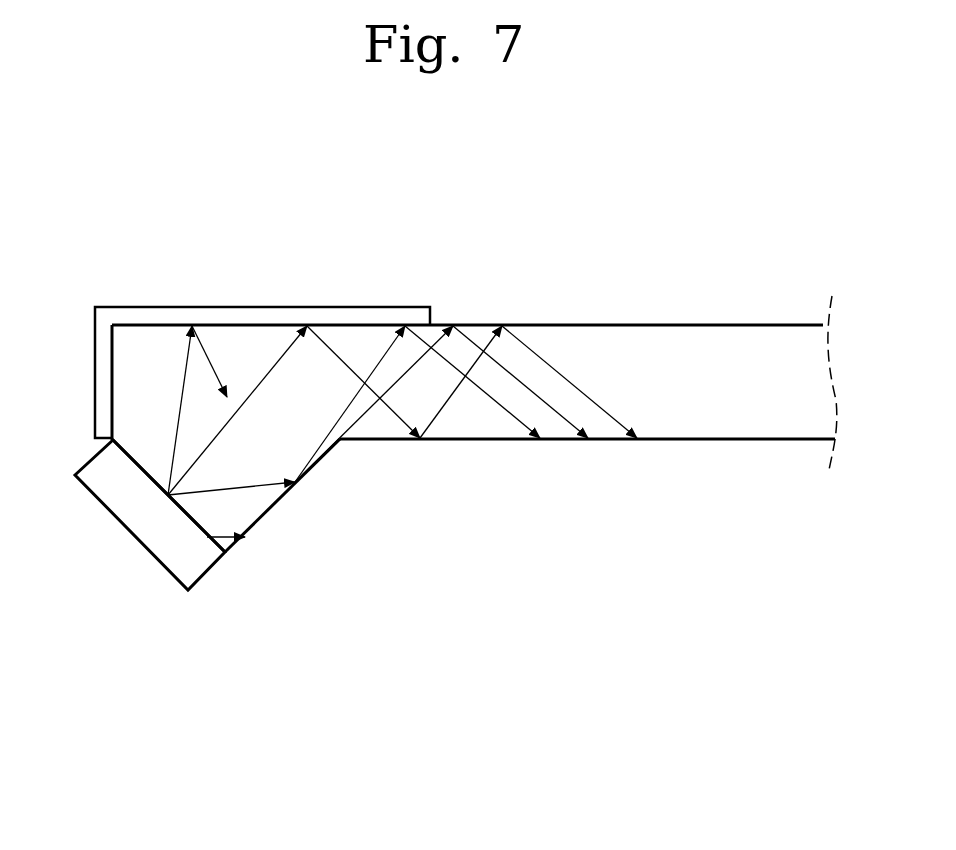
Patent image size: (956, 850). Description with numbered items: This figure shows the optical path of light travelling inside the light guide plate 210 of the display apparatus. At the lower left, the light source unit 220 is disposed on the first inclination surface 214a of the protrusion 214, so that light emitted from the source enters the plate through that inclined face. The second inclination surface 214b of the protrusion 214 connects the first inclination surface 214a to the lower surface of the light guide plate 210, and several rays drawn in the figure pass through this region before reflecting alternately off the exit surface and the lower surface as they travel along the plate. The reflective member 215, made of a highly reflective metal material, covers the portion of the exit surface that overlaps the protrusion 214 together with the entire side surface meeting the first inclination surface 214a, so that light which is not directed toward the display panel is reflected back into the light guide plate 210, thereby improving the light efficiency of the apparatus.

The light guide plate 210 is at (686, 259).
The protrusion 214 is at (226, 521).
The first inclination surface 214a is at (188, 517).
The second inclination surface 214b is at (267, 517).
The reflective member 215 is at (383, 306).
The light source unit 220 is at (117, 502).